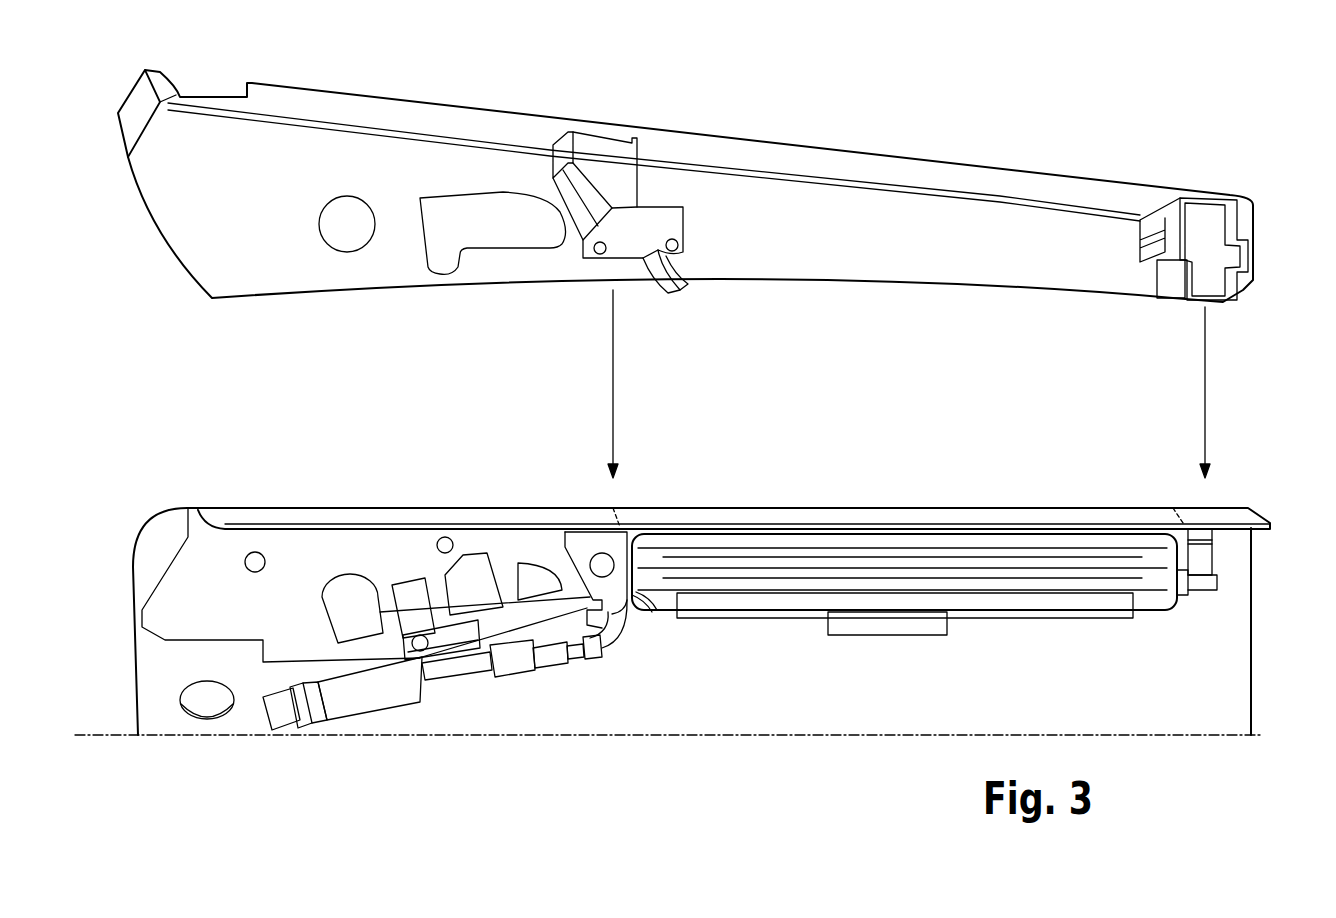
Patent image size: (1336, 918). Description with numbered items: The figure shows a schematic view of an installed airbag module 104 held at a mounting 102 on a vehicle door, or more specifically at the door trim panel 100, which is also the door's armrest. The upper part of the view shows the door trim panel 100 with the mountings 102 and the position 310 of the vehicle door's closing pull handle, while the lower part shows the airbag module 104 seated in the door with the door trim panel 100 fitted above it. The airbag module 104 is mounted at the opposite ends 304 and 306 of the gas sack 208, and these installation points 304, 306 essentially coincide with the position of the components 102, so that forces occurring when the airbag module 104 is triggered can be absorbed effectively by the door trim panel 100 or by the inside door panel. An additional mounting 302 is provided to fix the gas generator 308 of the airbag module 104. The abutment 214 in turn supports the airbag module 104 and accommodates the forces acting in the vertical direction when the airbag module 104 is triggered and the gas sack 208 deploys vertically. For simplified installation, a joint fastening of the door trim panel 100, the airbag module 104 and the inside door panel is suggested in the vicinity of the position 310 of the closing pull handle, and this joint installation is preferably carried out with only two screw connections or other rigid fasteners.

The door trim panel 100 is at (984, 160).
The mounting 102 is at (620, 247).
The airbag module 104 is at (713, 697).
The gas sack 208 is at (748, 548).
The abutment 214 is at (857, 627).
The additional mounting 302 is at (442, 636).
The installation point 304 is at (1200, 563).
The installation point 306 is at (612, 600).
The gas generator 308 is at (367, 700).
The position of the closing pull handle 310 is at (485, 225).